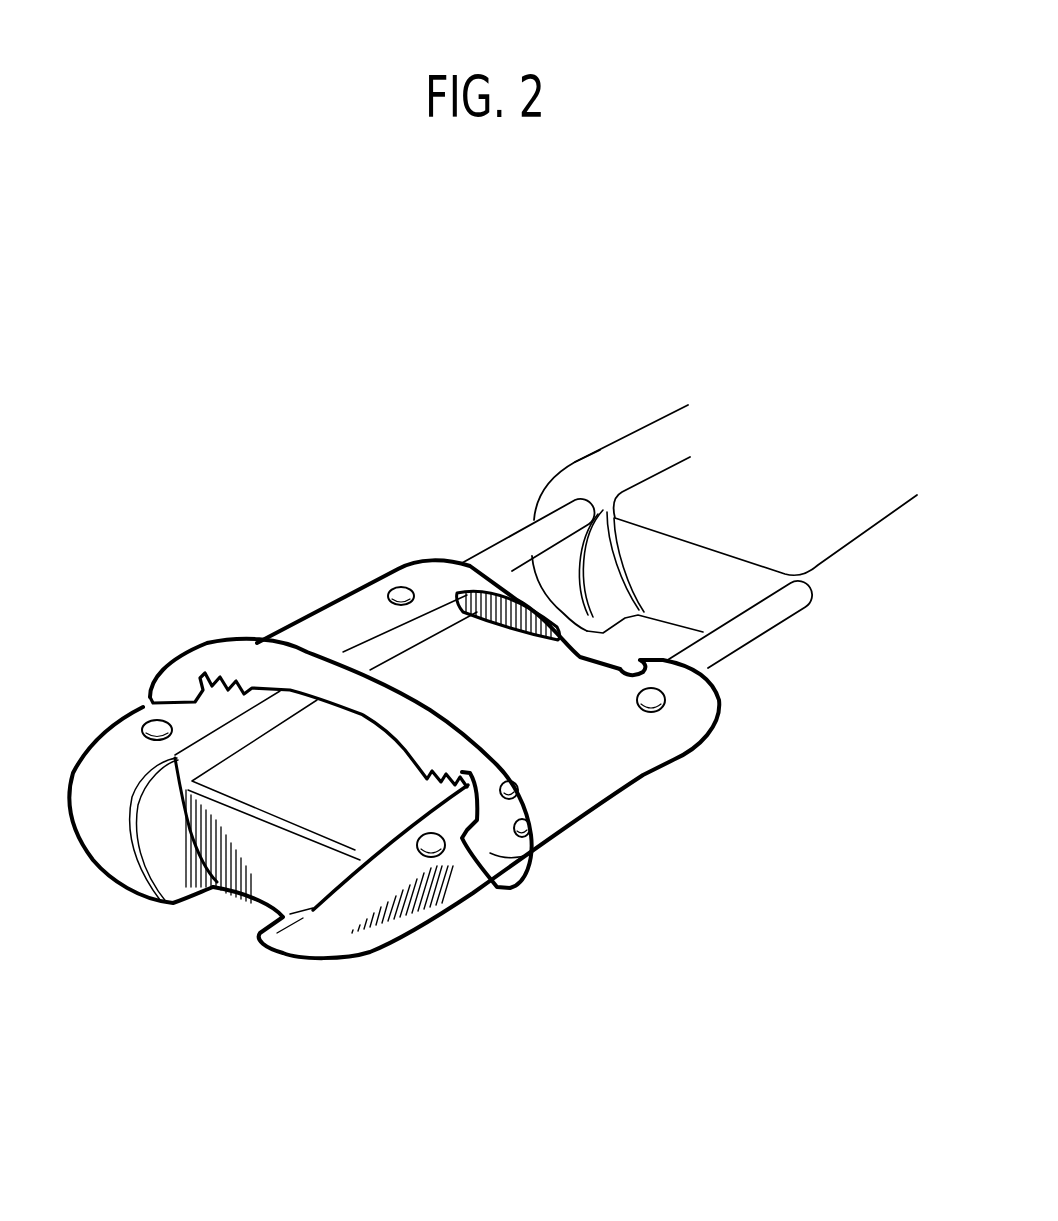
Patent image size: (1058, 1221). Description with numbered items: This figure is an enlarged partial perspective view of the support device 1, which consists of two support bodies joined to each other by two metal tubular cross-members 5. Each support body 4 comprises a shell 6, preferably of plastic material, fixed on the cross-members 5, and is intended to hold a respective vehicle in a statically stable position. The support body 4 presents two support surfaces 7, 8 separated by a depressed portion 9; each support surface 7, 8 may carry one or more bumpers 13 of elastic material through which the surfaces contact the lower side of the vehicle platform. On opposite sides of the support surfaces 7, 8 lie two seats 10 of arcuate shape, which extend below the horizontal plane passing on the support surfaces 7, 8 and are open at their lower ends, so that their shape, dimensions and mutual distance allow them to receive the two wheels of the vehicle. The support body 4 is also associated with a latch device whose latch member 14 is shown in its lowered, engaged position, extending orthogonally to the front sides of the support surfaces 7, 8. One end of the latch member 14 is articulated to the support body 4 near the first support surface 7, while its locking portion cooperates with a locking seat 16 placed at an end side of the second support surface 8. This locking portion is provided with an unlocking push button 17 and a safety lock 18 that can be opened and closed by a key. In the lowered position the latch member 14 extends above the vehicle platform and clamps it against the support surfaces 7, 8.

The support device 1 is at (494, 330).
The support body 4 is at (637, 413).
The tubular cross-member 5 is at (512, 540).
The shell 6 is at (580, 444).
The support surface 7 is at (307, 636).
The support surface 8 is at (598, 748).
The depressed portion 9 is at (237, 777).
The seat 10 is at (518, 595).
The bumper 13 is at (401, 595).
The latch member 14 is at (297, 673).
The locking seat 16 is at (520, 876).
The unlocking push button 17 is at (523, 787).
The safety lock 18 is at (530, 837).